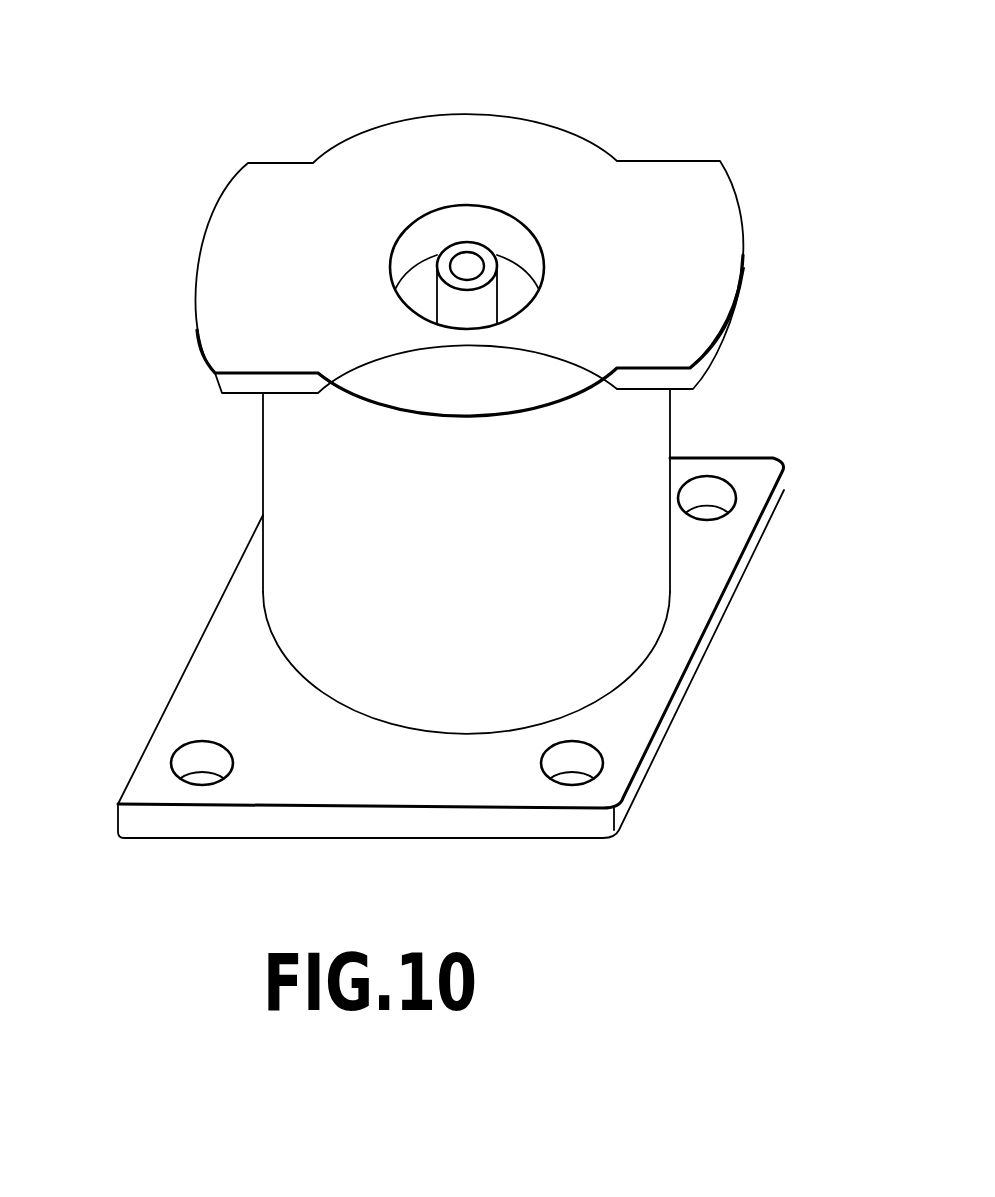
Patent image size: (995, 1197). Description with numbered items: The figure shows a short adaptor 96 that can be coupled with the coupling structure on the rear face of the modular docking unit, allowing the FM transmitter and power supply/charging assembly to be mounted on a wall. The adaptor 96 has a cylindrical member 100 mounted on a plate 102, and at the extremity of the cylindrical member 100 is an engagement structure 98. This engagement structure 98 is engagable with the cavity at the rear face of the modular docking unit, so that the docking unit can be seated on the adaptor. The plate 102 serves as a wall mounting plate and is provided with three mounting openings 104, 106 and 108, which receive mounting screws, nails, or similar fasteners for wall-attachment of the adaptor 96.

The adaptor 96 is at (150, 182).
The engagement structure 98 is at (622, 78).
The cylindrical member 100 is at (274, 442).
The plate 102 is at (652, 687).
The mounting opening 104 is at (705, 508).
The mounting opening 106 is at (578, 772).
The mounting opening 108 is at (198, 780).